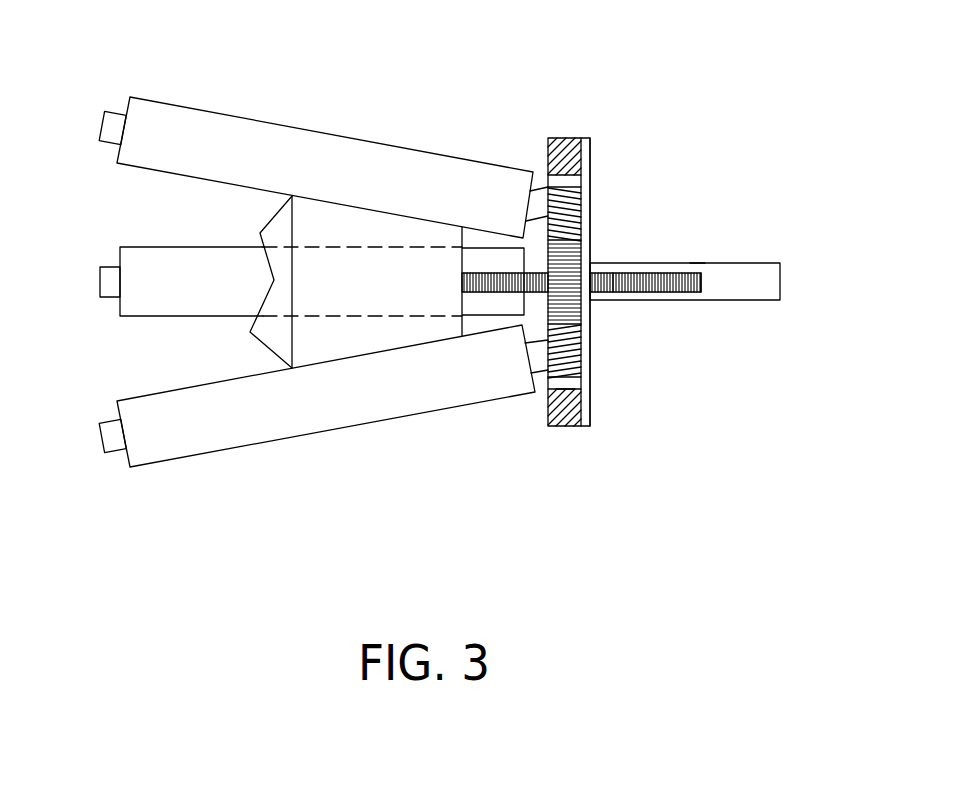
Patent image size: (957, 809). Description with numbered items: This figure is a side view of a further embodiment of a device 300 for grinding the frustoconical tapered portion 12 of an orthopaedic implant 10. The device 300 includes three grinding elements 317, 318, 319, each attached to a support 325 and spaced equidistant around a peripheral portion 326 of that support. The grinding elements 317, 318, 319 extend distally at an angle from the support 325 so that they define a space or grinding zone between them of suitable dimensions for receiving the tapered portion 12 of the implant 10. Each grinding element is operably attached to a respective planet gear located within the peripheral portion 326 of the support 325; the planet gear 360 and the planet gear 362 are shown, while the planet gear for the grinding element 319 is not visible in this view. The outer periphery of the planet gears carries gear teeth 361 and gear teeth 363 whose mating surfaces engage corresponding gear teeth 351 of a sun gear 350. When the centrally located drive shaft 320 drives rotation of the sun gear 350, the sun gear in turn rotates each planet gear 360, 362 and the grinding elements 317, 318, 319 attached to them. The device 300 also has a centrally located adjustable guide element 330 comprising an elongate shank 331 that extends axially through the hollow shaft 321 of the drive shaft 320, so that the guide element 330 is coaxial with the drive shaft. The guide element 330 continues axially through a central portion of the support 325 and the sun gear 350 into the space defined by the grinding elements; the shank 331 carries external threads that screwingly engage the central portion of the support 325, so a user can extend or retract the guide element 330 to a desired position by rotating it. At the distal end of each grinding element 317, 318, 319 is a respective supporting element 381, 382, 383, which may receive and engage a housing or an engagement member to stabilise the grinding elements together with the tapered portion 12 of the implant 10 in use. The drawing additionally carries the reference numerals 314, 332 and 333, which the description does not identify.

The device 300 is at (630, 47).
The orthopaedic implant 10 is at (99, 205).
The frustoconical tapered portion 12 is at (331, 237).
The grinding element 317 is at (231, 115).
The grinding element 318 is at (302, 436).
The grinding element 319 is at (487, 248).
The supporting element 381 is at (99, 125).
The supporting element 382 is at (100, 436).
The supporting element 383 is at (100, 281).
The threaded drive shaft 332 is at (478, 292).
The support 325 is at (583, 138).
The peripheral portion 326 is at (560, 155).
The housing wall 314 is at (591, 244).
The planet gear 360 is at (578, 183).
The gear teeth 361 is at (570, 218).
The planet gear 362 is at (577, 390).
The gear teeth 363 is at (567, 362).
The sun gear 350 is at (565, 315).
The gear teeth 351 is at (565, 326).
The drive shaft 320 is at (755, 263).
The hollow shaft 321 is at (697, 263).
The adjustable guide element 330 is at (663, 292).
The elongate shank 331 is at (613, 292).
The thread end 333 is at (702, 283).